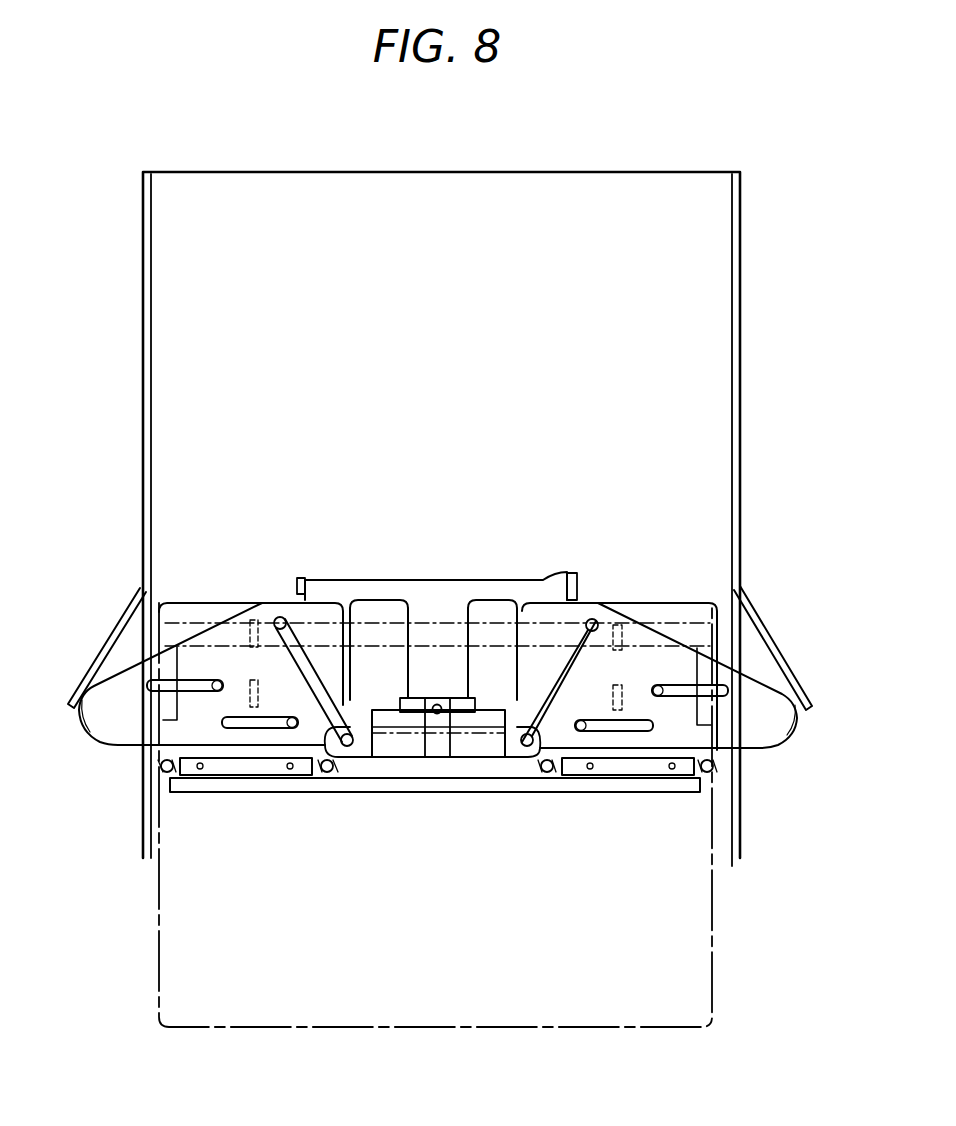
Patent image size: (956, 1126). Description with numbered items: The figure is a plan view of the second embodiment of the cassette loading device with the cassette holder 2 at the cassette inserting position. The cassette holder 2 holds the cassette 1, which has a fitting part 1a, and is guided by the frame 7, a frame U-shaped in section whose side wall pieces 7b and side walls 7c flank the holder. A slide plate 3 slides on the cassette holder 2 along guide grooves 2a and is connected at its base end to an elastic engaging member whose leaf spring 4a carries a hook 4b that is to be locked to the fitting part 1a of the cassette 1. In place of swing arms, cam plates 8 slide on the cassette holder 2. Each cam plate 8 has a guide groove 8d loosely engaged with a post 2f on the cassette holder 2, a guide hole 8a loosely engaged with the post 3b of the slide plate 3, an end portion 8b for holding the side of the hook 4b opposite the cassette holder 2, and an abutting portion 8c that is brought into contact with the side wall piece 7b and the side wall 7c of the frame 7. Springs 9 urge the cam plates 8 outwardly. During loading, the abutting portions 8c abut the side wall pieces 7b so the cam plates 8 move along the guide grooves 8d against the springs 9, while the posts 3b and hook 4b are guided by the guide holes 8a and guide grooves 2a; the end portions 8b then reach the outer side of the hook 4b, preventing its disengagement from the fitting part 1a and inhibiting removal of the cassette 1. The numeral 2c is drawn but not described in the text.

The cassette 1 is at (626, 1010).
The fitting part 1a is at (410, 680).
The cassette holder 2 is at (482, 796).
The guide grooves 2a is at (368, 640).
The engaging tab 2c is at (298, 592).
The post 2f is at (200, 770).
The slide plate 3 is at (400, 752).
The post 3b is at (330, 760).
The leaf spring 4a is at (440, 736).
The hook 4b is at (472, 660).
The frame 7 is at (741, 294).
The side wall piece 7b is at (108, 636).
The side wall 7c is at (152, 374).
The cam plate 8 is at (120, 724).
The guide hole 8a is at (316, 610).
The end portion 8b is at (350, 748).
The abutting portion 8c is at (90, 720).
The guide groove 8d is at (186, 678).
The springs 9 is at (185, 777).